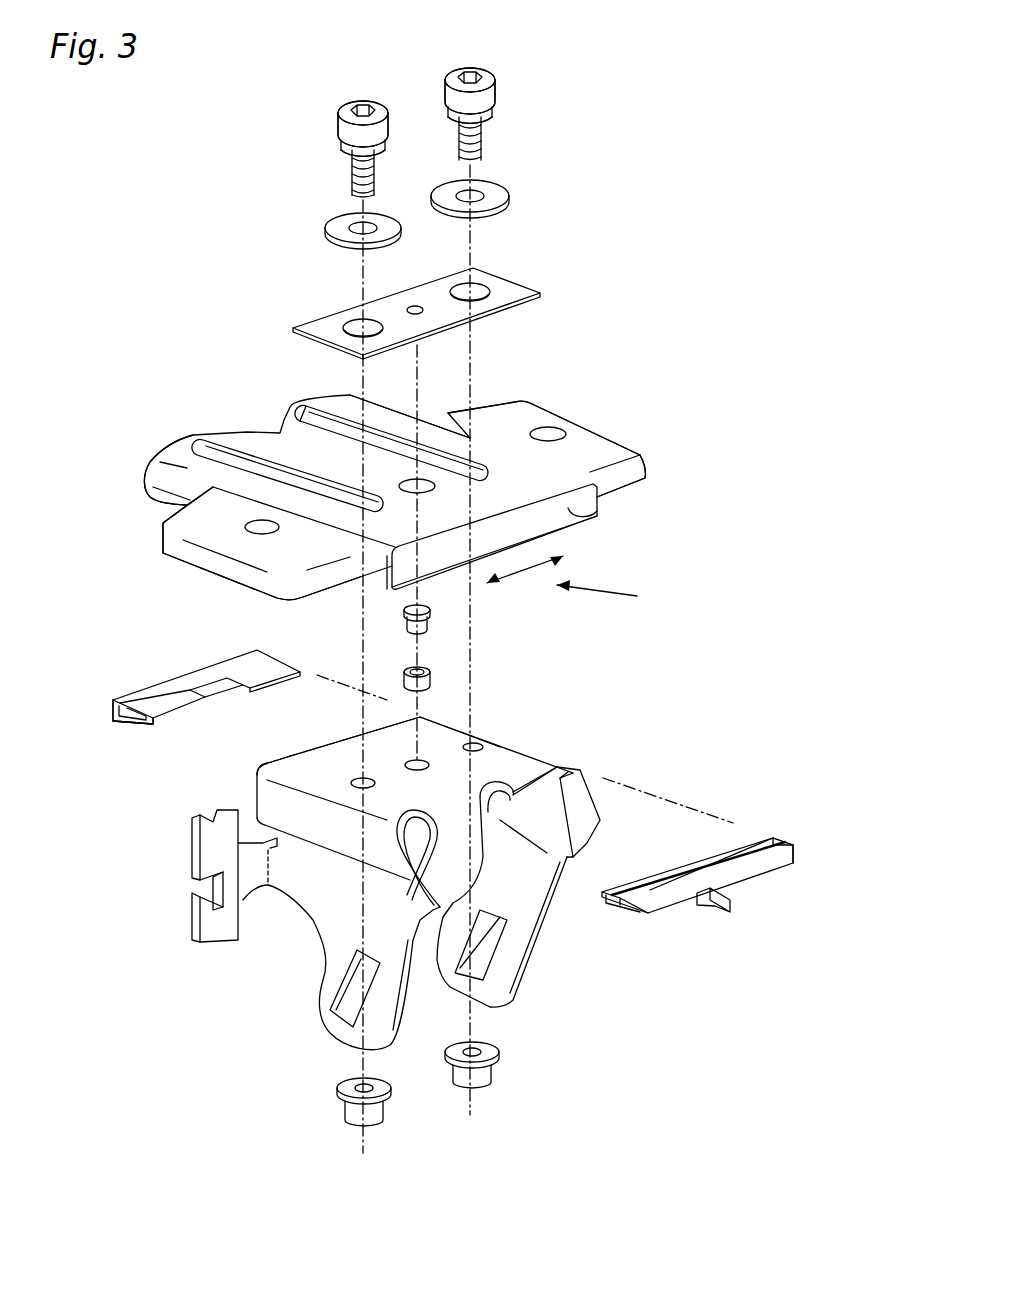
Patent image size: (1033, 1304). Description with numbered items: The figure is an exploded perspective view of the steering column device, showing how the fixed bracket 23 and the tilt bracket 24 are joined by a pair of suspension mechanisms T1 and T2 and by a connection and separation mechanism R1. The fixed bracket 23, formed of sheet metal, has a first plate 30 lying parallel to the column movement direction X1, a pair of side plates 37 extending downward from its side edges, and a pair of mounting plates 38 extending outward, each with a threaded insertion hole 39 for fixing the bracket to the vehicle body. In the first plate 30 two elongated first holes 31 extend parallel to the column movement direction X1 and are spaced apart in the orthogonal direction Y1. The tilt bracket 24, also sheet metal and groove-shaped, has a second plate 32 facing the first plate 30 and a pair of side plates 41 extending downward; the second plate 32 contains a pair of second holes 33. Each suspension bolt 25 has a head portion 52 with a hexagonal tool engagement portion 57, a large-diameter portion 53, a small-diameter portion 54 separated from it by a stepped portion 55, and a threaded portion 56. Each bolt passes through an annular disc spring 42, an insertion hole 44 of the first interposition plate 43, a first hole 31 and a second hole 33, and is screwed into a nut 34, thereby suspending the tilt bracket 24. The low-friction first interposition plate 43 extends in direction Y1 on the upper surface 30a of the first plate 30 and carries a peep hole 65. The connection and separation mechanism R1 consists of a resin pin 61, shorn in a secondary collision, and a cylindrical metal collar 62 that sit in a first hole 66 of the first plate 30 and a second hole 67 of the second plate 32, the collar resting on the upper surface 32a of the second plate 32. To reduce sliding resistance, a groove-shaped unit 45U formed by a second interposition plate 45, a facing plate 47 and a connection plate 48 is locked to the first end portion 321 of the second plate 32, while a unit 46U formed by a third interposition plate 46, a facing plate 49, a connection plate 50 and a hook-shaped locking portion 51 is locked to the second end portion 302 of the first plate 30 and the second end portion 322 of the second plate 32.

The fixed bracket 23 is at (503, 470).
The tilt bracket 24 is at (404, 865).
The suspension bolt 25 is at (417, 103).
The first plate 30 is at (363, 475).
The upper surface of the first plate 30a is at (383, 468).
The first hole 31 is at (336, 418).
The second plate 32 is at (435, 782).
The upper surface of the second plate 32a is at (346, 770).
The second hole 33 is at (368, 780).
The nut 34 is at (385, 1115).
The side plate 37 is at (150, 495).
The mounting plate 38 is at (212, 470).
The threaded insertion hole 39 is at (264, 526).
The side plate 41 is at (325, 905).
The disc spring 42 is at (335, 228).
The first interposition plate 43 is at (423, 294).
The insertion hole 44 is at (353, 322).
The second interposition plate 45 is at (173, 698).
The groove-shaped unit 45U is at (148, 690).
The third interposition plate 46 is at (708, 855).
The unit 46U is at (758, 843).
The facing plate 47 is at (118, 722).
The connection plate 48 is at (108, 708).
The facing plate 49 is at (685, 875).
The connection plate 50 is at (760, 866).
The locking portion 51 is at (730, 905).
The head portion 52 is at (345, 110).
The large-diameter portion 53 is at (348, 140).
The small-diameter portion 54 is at (352, 155).
The stepped portion 55 is at (378, 140).
The threaded portion 56 is at (352, 180).
The tool engagement portion 57 is at (363, 103).
The resin pin 61 is at (430, 618).
The metal collar 62 is at (430, 676).
The peep hole 65 is at (416, 306).
The first hole for the connection and separation mechanism 66 is at (420, 480).
The second hole for the connection and separation mechanism 67 is at (422, 762).
The second end portion of the first plate 302 is at (444, 542).
The first end portion of the second plate 321 is at (300, 765).
The second end portion of the second plate 322 is at (560, 777).
The connection and separation mechanism R1 is at (495, 648).
The suspension mechanism T1 is at (348, 97).
The suspension mechanism T2 is at (458, 62).
The column movement direction X1 is at (618, 596).
The direction orthogonal to the column movement direction Y1 is at (525, 570).